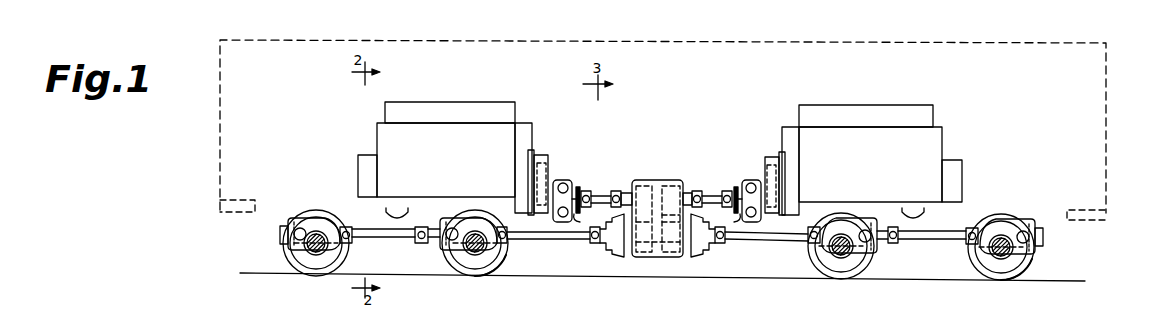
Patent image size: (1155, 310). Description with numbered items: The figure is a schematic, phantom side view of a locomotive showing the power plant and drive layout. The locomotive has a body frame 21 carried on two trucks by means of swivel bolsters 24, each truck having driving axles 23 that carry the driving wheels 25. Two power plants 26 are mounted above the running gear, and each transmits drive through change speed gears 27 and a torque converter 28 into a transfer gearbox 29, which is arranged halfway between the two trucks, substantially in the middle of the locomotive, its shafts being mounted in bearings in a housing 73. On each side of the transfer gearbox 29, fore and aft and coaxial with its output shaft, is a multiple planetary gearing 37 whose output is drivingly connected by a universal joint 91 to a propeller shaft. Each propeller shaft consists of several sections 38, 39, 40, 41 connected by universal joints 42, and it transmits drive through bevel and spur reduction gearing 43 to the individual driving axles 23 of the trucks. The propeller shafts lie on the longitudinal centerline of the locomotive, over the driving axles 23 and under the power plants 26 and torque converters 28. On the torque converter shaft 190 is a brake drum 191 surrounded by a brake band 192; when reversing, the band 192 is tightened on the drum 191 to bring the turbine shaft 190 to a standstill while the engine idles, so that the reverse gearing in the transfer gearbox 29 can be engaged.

The body frame 21 is at (1090, 213).
The driving axle 23 is at (314, 250).
The swivel bolster 24 is at (397, 214).
The driving wheel 25 is at (507, 260).
The power plant 26 is at (503, 130).
The change speed gears 27 is at (548, 154).
The torque converter 28 is at (566, 182).
The transfer gearbox 29 is at (658, 181).
The multiple planetary gearing 37 is at (624, 262).
The propeller shaft section 38 is at (567, 240).
The propeller shaft section 39 is at (423, 244).
The propeller shaft section 40 is at (375, 238).
The propeller shaft section 41 is at (350, 224).
The universal joint 42 is at (347, 227).
The bevel and spur reduction gearing 43 is at (303, 220).
The housing 73 is at (647, 255).
The universal joint 91 is at (594, 244).
The torque converter shaft 190 is at (600, 196).
The brake drum 191 is at (584, 188).
The brake band 192 is at (657, 219).